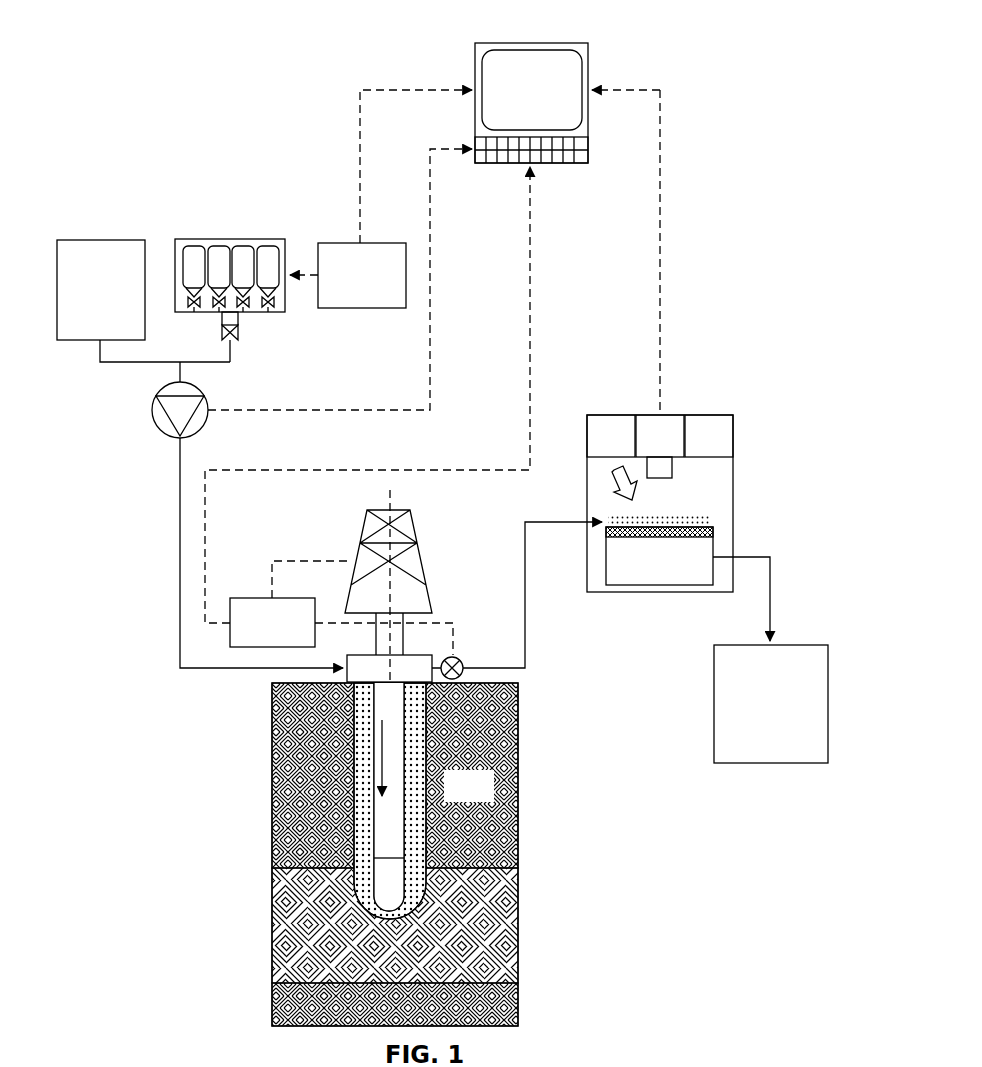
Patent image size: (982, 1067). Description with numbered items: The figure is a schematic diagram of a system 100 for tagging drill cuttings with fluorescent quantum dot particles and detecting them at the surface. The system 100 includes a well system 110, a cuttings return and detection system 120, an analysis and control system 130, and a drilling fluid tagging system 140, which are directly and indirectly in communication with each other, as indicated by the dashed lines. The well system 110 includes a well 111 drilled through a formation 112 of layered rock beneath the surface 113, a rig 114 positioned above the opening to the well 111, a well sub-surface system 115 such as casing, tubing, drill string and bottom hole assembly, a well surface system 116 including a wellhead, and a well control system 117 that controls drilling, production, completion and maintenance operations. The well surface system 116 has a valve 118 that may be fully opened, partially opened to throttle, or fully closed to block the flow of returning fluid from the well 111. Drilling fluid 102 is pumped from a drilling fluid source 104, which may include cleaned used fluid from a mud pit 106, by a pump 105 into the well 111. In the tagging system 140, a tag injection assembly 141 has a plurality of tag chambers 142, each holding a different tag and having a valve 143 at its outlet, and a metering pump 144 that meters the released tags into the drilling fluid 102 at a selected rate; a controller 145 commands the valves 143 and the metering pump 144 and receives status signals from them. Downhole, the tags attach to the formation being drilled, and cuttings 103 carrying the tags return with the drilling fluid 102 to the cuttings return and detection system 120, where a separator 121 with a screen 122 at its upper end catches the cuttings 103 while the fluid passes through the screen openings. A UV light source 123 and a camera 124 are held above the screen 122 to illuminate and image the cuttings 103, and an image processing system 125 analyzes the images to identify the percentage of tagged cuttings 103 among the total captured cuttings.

The system 100 is at (122, 44).
The drilling fluid 102 is at (178, 535).
The cuttings 103 is at (690, 520).
The drilling fluid source 104 is at (123, 304).
The pump 105 is at (206, 427).
The mud pit 106 is at (793, 722).
The well system 110 is at (333, 526).
The well 111 is at (350, 722).
The formation 112 is at (491, 801).
The surface 113 is at (505, 676).
The rig 114 is at (411, 530).
The well sub-surface system 115 is at (398, 875).
The well surface system 116 is at (443, 604).
The well control system 117 is at (294, 638).
The valve 118 is at (456, 656).
The cuttings return and detection system 120 is at (742, 392).
The separator 121 is at (682, 573).
The screen 122 is at (715, 532).
The UV light source 123 is at (633, 450).
The camera 124 is at (682, 450).
The image processing system 125 is at (731, 450).
The analysis and control system 130 is at (586, 34).
The drilling fluid tagging system 140 is at (228, 156).
The tag injection assembly 141 is at (277, 239).
The tag chambers 142 is at (243, 247).
The valve 143 is at (274, 300).
The metering pump 144 is at (240, 323).
The controller 145 is at (384, 290).